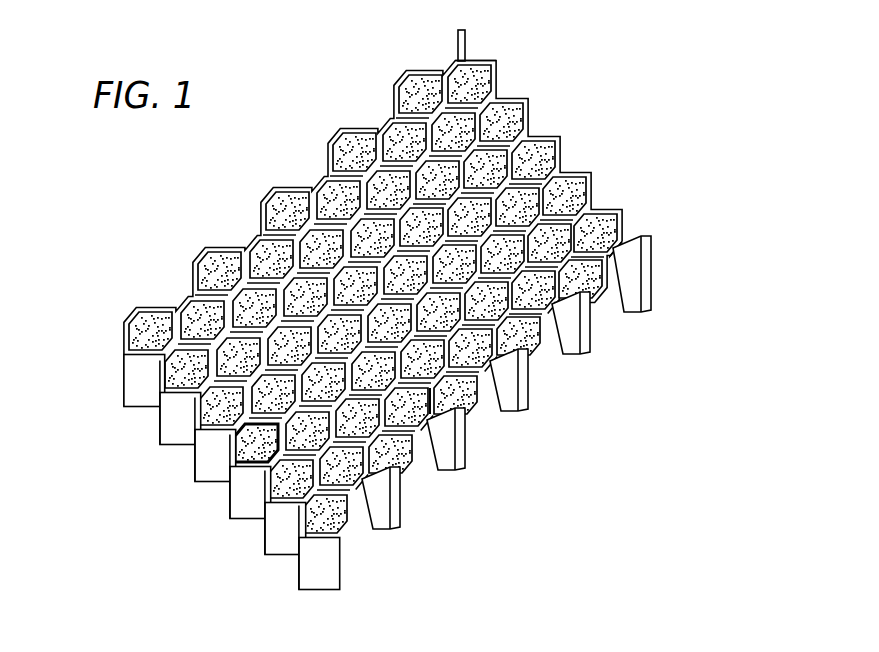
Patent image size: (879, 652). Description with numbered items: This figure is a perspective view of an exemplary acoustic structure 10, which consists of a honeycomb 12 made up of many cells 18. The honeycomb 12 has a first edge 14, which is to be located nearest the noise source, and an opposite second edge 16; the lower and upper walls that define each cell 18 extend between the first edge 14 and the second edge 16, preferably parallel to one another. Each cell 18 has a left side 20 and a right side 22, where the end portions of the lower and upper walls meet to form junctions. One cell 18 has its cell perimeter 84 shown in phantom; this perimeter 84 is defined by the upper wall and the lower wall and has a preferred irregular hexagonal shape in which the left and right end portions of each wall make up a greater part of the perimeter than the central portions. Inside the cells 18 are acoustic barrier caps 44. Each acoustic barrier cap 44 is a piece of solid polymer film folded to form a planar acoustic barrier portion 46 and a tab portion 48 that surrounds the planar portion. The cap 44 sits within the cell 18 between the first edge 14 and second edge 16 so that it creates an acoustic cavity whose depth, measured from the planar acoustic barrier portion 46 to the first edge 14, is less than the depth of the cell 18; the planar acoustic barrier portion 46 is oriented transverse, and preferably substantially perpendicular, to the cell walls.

The acoustic structure 10 is at (404, 308).
The honeycomb 12 is at (351, 143).
The first edge 14 is at (530, 412).
The second edge 16 is at (133, 335).
The cell 18 is at (477, 62).
The left side 20 is at (502, 220).
The right side 22 is at (548, 128).
The acoustic barrier cap 44 is at (222, 262).
The planar acoustic barrier portion 46 is at (418, 396).
The tab portion 48 is at (468, 436).
The cell perimeter 84 is at (236, 436).